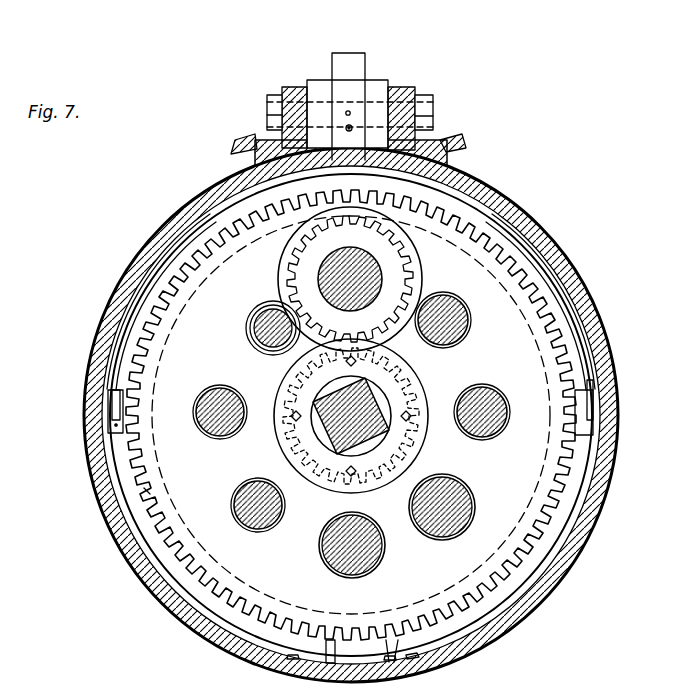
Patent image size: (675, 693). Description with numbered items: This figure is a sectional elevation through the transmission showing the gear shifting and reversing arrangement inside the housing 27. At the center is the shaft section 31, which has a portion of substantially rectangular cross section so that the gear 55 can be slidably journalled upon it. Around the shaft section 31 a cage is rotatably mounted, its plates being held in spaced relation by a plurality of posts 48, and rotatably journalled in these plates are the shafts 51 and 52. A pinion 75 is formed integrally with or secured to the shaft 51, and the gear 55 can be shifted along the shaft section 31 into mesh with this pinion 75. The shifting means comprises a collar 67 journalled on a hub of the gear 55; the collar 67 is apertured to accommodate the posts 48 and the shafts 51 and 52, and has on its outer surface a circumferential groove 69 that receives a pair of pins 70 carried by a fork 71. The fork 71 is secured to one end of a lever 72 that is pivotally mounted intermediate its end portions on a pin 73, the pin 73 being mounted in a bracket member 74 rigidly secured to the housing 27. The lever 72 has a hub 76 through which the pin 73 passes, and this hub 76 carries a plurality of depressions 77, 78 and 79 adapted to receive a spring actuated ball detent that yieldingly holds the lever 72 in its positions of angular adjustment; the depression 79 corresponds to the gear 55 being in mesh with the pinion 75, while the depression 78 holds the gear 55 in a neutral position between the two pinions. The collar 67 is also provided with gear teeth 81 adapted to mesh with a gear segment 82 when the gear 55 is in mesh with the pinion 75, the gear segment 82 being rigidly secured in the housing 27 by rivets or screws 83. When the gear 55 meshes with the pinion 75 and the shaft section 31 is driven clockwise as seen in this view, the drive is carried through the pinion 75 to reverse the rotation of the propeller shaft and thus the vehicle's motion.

The housing 27 is at (196, 197).
The shaft section 31 is at (333, 428).
The posts 48 is at (456, 487).
The shaft 51 is at (345, 272).
The shaft 52 is at (268, 325).
The gear 55 is at (410, 395).
The collar 67 is at (556, 517).
The circumferential groove 69 is at (538, 328).
The pins 70 is at (140, 417).
The fork 71 is at (543, 264).
The lever 72 is at (357, 53).
The pin 73 is at (417, 100).
The bracket member 74 is at (293, 93).
The pinion 75 is at (400, 278).
The hub 76 is at (322, 82).
The depression 77 is at (348, 109).
The depression 78 is at (352, 125).
The depression 79 is at (352, 130).
The gear teeth 81 is at (146, 492).
The gear segment 82 is at (333, 648).
The rivets or screws 83 is at (393, 648).